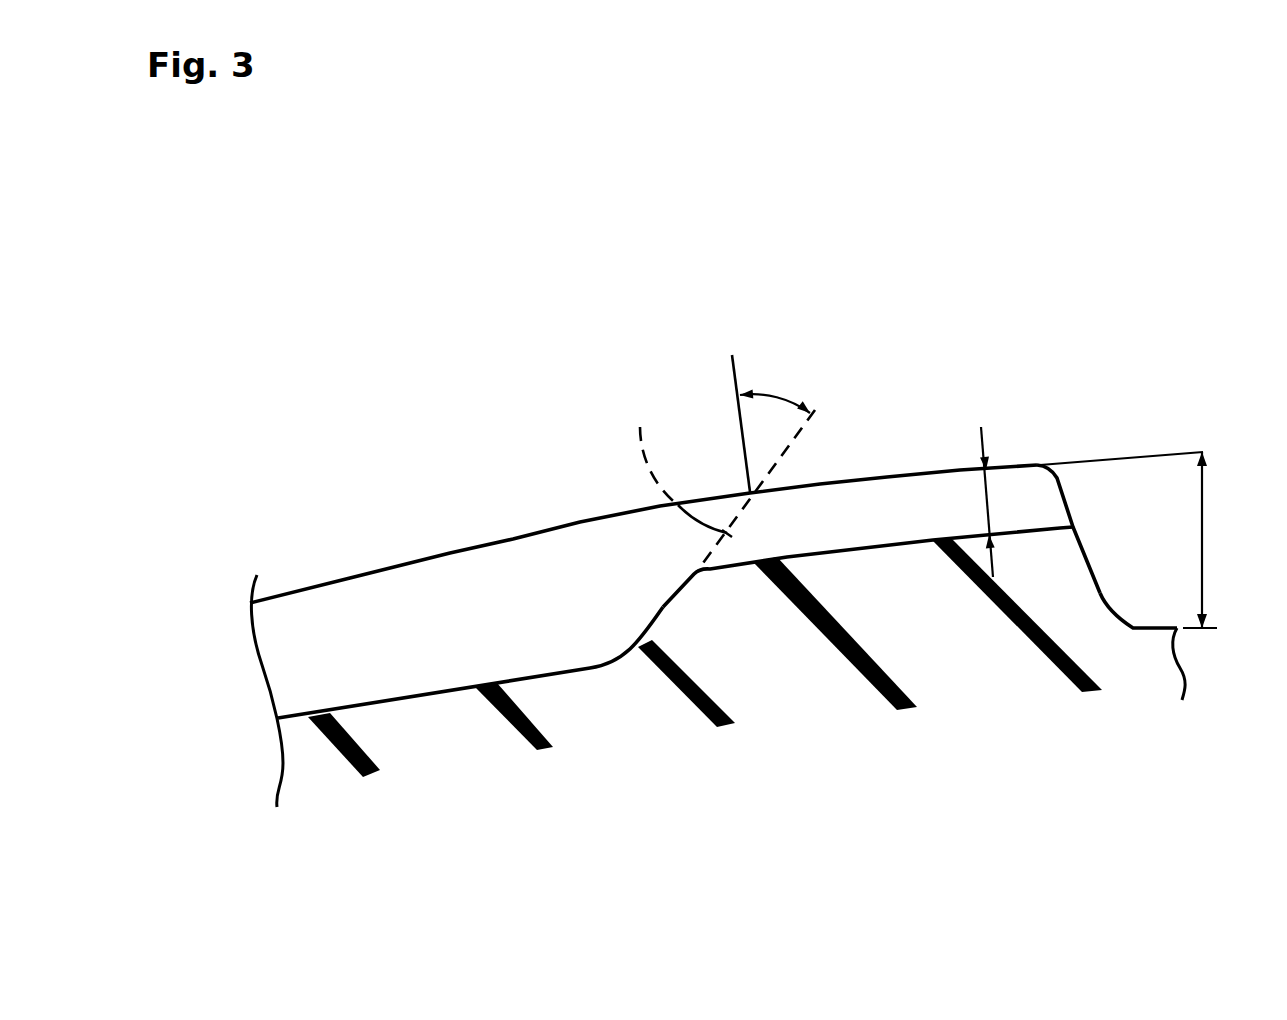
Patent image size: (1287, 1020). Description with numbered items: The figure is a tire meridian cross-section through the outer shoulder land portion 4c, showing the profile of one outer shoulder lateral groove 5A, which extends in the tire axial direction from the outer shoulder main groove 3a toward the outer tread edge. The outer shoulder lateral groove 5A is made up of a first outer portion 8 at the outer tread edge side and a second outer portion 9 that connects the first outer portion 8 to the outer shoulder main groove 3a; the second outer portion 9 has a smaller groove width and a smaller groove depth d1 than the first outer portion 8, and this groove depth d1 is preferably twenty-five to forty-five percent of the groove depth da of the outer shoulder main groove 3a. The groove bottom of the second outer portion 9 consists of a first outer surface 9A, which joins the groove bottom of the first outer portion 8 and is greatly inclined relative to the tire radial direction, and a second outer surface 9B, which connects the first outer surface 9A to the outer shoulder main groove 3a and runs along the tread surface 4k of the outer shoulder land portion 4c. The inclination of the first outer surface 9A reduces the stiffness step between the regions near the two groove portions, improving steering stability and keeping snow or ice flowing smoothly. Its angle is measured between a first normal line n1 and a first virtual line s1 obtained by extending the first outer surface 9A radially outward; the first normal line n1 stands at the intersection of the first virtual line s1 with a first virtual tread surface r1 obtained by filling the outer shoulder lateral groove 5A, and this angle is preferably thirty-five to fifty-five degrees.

The outer shoulder land portion 4c is at (580, 378).
The outer shoulder lateral groove 5A is at (353, 563).
The first outer portion 8 is at (458, 610).
The first virtual tread surface r1 is at (513, 537).
The tread surface 4k is at (582, 518).
The first virtual line s1 is at (716, 481).
The first normal line n1 is at (733, 376).
The second outer portion 9 is at (888, 510).
The first outer surface 9A is at (665, 603).
The second outer surface 9B is at (735, 562).
The groove depth of the second outer portion d1 is at (988, 500).
The outer shoulder main groove 3a is at (1168, 564).
The groove depth of the outer shoulder main groove da is at (1149, 540).